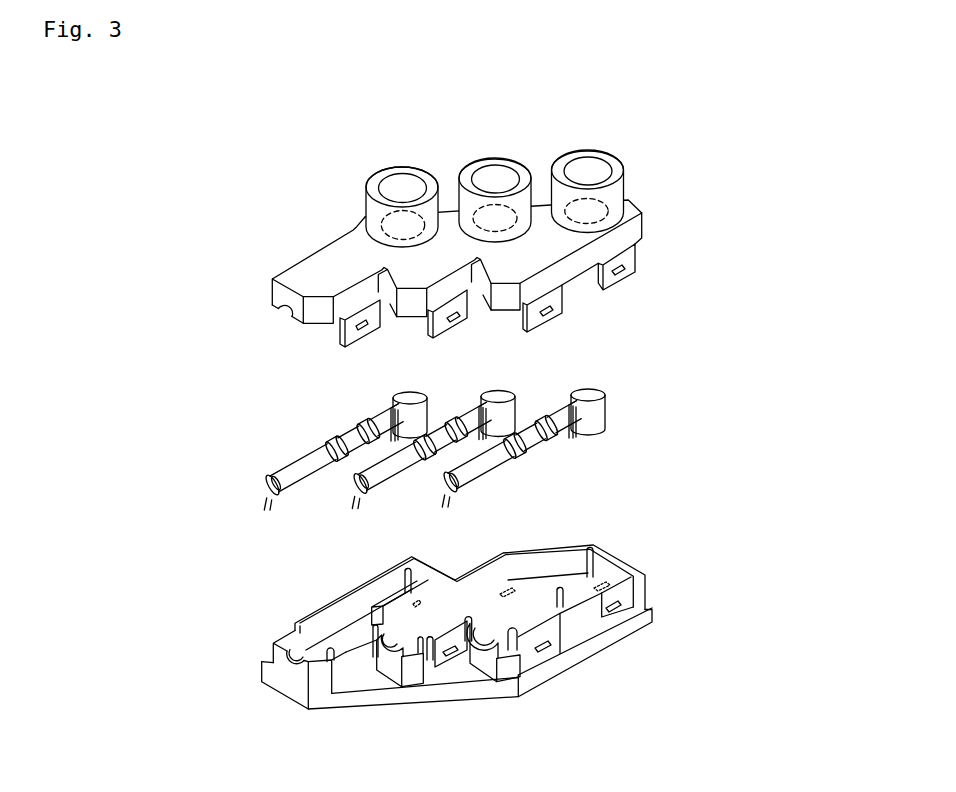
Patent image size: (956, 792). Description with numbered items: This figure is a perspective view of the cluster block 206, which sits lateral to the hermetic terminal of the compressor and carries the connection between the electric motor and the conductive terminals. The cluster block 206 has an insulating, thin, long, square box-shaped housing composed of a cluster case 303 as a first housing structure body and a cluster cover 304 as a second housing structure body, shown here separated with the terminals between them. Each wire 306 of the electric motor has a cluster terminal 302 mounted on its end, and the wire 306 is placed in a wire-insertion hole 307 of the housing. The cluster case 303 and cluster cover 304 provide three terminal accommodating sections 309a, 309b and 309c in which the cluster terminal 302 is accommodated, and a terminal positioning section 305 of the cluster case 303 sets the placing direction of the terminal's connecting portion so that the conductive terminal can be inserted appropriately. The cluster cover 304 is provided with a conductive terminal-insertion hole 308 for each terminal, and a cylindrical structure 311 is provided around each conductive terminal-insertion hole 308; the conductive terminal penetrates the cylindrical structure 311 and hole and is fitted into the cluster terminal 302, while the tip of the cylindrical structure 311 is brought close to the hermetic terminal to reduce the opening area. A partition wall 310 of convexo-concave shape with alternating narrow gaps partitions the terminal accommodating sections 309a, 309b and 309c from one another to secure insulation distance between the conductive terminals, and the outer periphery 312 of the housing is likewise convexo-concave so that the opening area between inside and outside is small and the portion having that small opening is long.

The cluster block 206 is at (181, 214).
The cluster terminal 302 is at (588, 420).
The cluster case 303 is at (647, 585).
The cluster cover 304 is at (642, 228).
The terminal positioning section 305 is at (602, 589).
The wire 306 is at (310, 463).
The wire-insertion hole 307 is at (272, 647).
The conductive terminal-insertion hole 308 is at (586, 211).
The terminal accommodating section 309a is at (338, 622).
The terminal accommodating section 309b is at (440, 618).
The terminal accommodating section 309c is at (538, 593).
The partition wall 310 is at (402, 612).
The cylindrical structure 311 is at (398, 170).
The outer periphery 312 is at (317, 613).